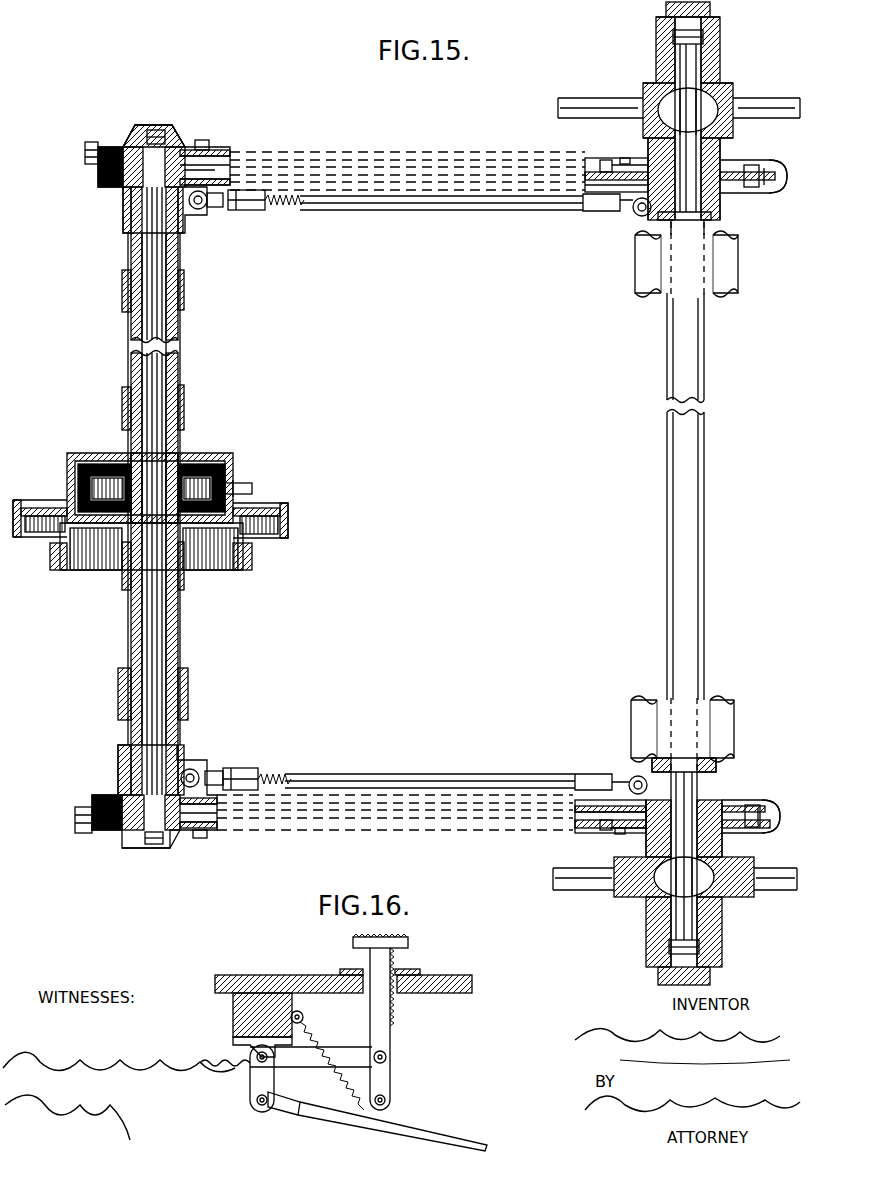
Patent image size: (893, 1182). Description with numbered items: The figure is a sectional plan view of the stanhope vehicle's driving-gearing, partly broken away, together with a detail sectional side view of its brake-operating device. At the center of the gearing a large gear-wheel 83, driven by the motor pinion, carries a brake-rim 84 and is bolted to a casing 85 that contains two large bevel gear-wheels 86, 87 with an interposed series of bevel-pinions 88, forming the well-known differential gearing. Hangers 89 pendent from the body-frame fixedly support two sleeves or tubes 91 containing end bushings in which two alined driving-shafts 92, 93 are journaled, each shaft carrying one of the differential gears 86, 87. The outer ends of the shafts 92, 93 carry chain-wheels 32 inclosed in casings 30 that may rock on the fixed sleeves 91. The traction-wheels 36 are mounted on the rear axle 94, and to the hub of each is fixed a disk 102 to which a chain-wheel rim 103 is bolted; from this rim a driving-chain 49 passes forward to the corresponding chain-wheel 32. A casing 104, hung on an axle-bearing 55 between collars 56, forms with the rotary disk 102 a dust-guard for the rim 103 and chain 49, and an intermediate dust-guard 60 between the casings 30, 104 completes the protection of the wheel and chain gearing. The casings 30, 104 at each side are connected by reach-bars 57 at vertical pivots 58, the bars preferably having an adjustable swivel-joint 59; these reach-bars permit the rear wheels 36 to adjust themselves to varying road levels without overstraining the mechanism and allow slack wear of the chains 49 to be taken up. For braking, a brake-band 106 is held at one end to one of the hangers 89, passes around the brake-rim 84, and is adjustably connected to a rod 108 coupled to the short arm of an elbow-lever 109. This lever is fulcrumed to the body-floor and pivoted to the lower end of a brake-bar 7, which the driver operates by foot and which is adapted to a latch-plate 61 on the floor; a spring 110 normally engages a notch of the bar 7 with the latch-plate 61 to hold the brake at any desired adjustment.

In FIG. 16, the brake-bar 7 is at (385, 1027).
In FIG. 15, the casing 30 is at (98, 177).
In FIG. 15, the chain-wheel 32 is at (140, 160).
In FIG. 15, the traction-wheel 36 is at (679, 111).
In FIG. 15, the driving-chain 49 is at (397, 167).
In FIG. 15, the axle-bearing 55 is at (688, 220).
In FIG. 15, the collar 56 is at (713, 205).
In FIG. 15, the reach-bar 57 is at (455, 206).
In FIG. 15, the vertical pivot 58 is at (203, 212).
In FIG. 15, the adjustable swivel-joint 59 is at (255, 215).
In FIG. 15, the intermediate dust-guard 60 is at (490, 152).
In FIG. 16, the latch-plate 61 is at (403, 972).
In FIG. 15, the gear-wheel 83 is at (288, 522).
In FIG. 15, the brake-rim 84 is at (200, 570).
In FIG. 15, the casing 85 is at (185, 458).
In FIG. 15, the bevel gear-wheel 86 is at (75, 490).
In FIG. 15, the bevel gear-wheel 87 is at (105, 455).
In FIG. 15, the bevel-pinion 88 is at (240, 480).
In FIG. 15, the hanger 89 is at (122, 390).
In FIG. 15, the sleeve 91 is at (180, 355).
In FIG. 15, the driving-shaft 92 is at (150, 718).
In FIG. 15, the driving-shaft 93 is at (150, 260).
In FIG. 15, the rear axle 94 is at (690, 482).
In FIG. 15, the disk 102 is at (741, 172).
In FIG. 15, the chain-wheel rim 103 is at (600, 172).
In FIG. 15, the casing 104 is at (781, 195).
In FIG. 15, the brake-band 106 is at (50, 560).
In FIG. 16, the rod 108 is at (470, 1143).
In FIG. 16, the elbow-lever 109 is at (274, 1060).
In FIG. 16, the spring 110 is at (306, 1008).